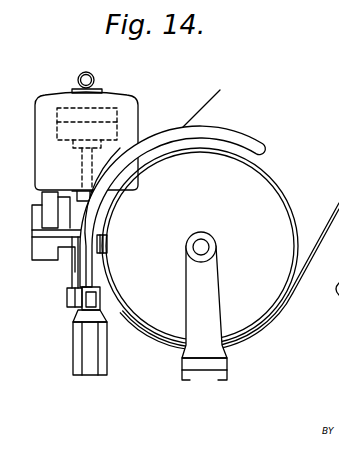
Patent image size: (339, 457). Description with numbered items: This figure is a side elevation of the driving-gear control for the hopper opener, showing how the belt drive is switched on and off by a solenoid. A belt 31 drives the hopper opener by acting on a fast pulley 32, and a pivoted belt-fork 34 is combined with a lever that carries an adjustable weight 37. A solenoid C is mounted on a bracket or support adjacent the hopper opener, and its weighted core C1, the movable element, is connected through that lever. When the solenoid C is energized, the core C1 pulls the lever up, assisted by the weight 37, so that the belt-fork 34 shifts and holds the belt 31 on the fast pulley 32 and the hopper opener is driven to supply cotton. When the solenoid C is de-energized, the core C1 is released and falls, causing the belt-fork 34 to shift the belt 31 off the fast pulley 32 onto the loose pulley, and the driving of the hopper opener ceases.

The solenoid C is at (119, 96).
The core C1 is at (62, 142).
The belt 31 is at (208, 103).
The fast pulley 32 is at (118, 280).
The belt-fork 34 is at (241, 140).
The adjustable weight 37 is at (78, 351).